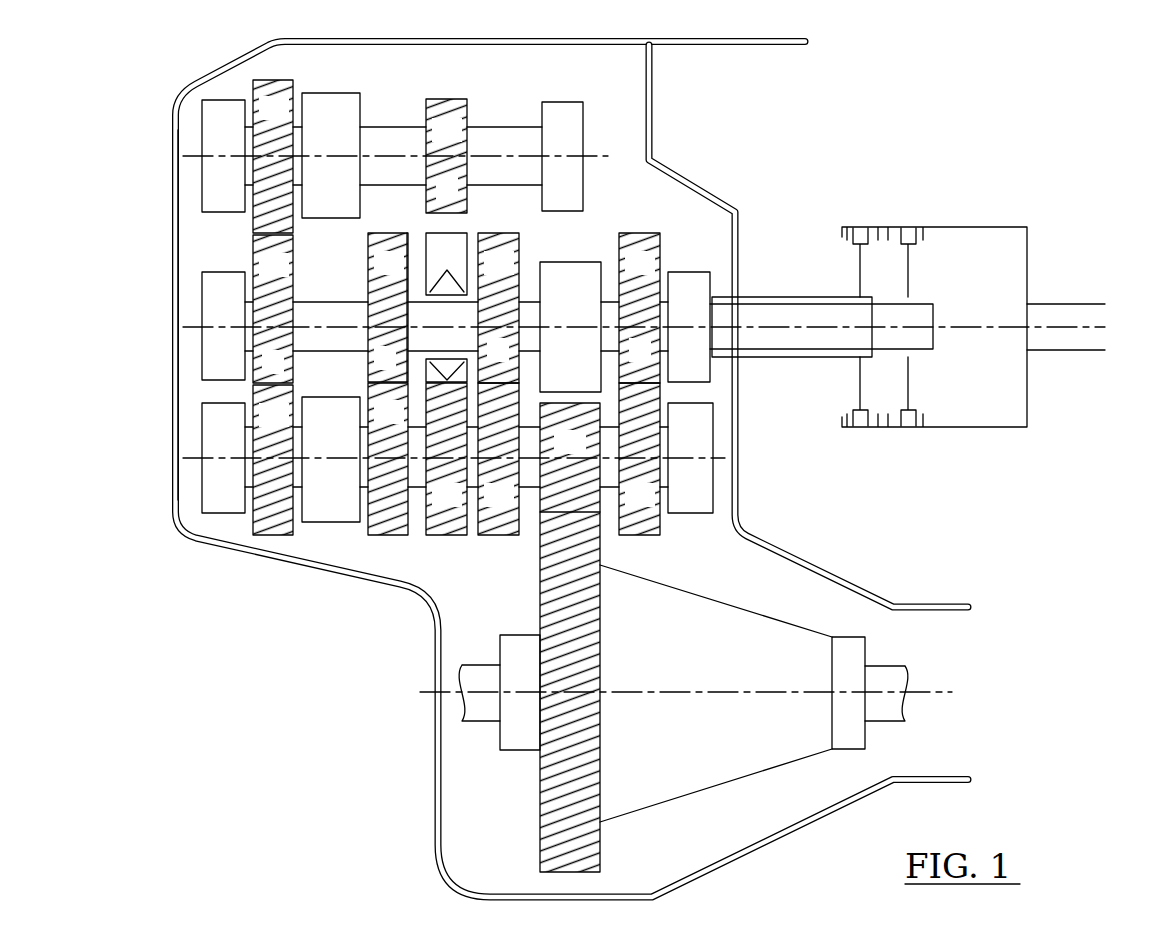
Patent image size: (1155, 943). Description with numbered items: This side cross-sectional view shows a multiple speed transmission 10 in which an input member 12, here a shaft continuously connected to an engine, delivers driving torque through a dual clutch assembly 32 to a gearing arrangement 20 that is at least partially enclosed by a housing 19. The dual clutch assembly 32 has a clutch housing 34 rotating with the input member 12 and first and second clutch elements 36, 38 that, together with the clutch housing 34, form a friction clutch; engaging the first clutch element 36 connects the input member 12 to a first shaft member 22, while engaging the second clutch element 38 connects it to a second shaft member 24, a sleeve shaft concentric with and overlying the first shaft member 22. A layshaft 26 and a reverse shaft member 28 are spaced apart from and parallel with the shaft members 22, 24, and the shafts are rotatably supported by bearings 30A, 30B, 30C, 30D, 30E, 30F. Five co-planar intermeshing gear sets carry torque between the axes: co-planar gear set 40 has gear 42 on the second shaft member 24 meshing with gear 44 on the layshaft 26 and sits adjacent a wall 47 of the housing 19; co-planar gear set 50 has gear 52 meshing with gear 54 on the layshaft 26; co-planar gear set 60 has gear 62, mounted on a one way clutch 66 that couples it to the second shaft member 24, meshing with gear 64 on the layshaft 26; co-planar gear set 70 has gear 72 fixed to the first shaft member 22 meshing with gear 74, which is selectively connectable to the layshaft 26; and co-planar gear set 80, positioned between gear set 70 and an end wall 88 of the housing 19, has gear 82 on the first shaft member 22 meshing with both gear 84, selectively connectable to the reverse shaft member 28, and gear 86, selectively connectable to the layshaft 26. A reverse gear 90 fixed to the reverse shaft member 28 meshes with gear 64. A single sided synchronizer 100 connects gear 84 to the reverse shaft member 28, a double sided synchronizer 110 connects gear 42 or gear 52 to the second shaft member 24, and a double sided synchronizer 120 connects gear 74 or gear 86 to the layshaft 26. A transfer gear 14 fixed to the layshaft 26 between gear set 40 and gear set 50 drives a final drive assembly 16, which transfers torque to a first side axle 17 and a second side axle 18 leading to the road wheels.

The multiple speed transmission 10 is at (840, 90).
The input member 12 is at (1068, 302).
The transfer gear 14 is at (583, 456).
The final drive assembly 16 is at (720, 666).
The first side axle 17 is at (480, 722).
The second side axle 18 is at (920, 722).
The housing 19 is at (186, 84).
The gearing arrangement 20 is at (385, 95).
The first shaft member 22 is at (320, 302).
The second shaft member 24 is at (783, 293).
The layshaft 26 is at (533, 488).
The reverse shaft member 28 is at (510, 127).
The bearing 30A is at (202, 140).
The bearing 30B is at (583, 125).
The bearing 30C is at (202, 292).
The bearing 30D is at (695, 270).
The bearing 30E is at (202, 437).
The bearing 30F is at (713, 470).
The dual clutch assembly 32 is at (914, 323).
The clutch housing 34 is at (978, 428).
The first clutch element 36 is at (910, 372).
The second clutch element 38 is at (857, 372).
The co-planar gear set 40 is at (680, 416).
The gear 42 is at (652, 277).
The gear 44 is at (652, 509).
The wall 47 is at (653, 100).
The co-planar gear set 50 is at (498, 426).
The gear 52 is at (511, 277).
The gear 54 is at (511, 509).
The co-planar gear set 60 is at (447, 426).
The gear 62 is at (460, 267).
The gear 64 is at (460, 509).
The one way clutch 66 is at (421, 280).
The co-planar gear set 70 is at (386, 431).
The gear 72 is at (401, 277).
The gear 74 is at (401, 426).
The co-planar gear set 80 is at (229, 285).
The gear 82 is at (286, 279).
The gear 84 is at (286, 122).
The gear 86 is at (286, 429).
The end wall 88 is at (172, 228).
The reverse gear 90 is at (460, 144).
The synchronizer 100 is at (348, 137).
The synchronizer 110 is at (588, 307).
The synchronizer 120 is at (348, 506).